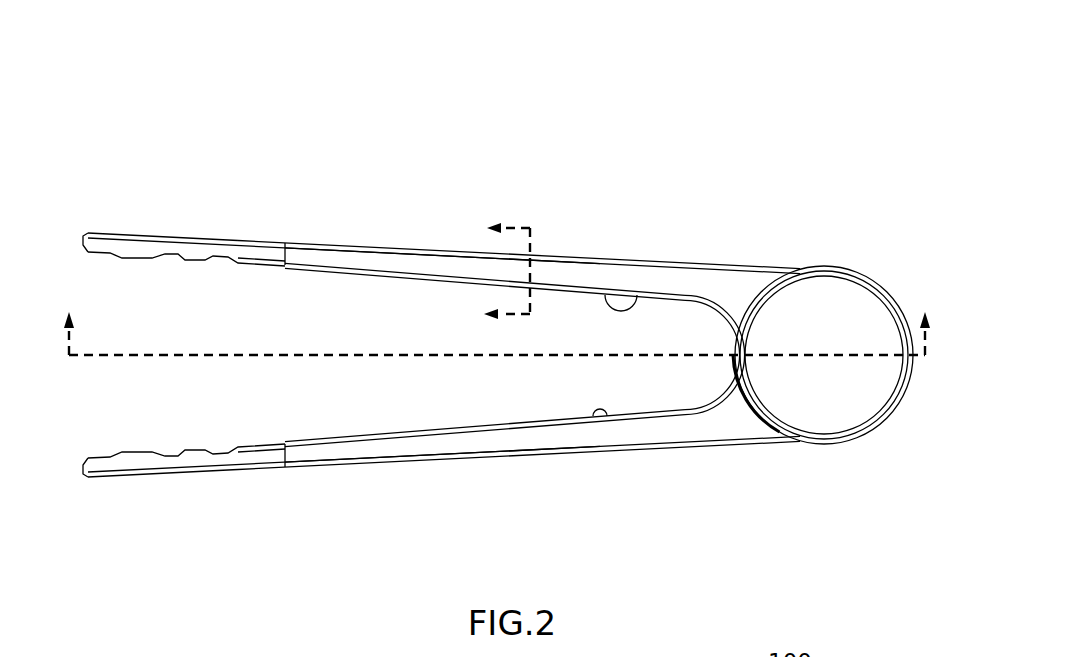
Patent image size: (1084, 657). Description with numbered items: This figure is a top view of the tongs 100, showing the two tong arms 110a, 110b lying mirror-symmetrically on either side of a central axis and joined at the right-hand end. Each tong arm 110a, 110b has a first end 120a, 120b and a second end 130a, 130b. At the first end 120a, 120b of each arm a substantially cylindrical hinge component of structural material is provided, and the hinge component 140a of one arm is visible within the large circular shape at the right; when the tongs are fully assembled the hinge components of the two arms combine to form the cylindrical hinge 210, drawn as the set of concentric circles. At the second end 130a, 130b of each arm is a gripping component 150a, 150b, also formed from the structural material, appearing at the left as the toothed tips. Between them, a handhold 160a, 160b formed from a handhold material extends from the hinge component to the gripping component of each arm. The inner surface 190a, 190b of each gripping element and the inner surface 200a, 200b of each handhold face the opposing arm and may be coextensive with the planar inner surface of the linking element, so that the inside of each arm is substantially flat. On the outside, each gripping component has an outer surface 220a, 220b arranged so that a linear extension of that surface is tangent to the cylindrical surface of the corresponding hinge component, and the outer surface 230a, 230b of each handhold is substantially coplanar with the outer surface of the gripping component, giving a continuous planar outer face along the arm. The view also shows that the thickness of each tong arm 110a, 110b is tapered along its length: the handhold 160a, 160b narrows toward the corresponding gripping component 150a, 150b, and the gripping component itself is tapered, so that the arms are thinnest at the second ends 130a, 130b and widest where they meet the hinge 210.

The tongs 100 is at (722, 76).
The tong arm 110a is at (552, 203).
The tong arm 110b is at (520, 478).
The first end 120a is at (715, 245).
The first end 120b is at (715, 472).
The second end 130a is at (100, 210).
The second end 130b is at (89, 496).
The hinge component 140a is at (818, 413).
The gripping component 150a is at (235, 248).
The gripping component 150b is at (217, 462).
The handhold 160a is at (402, 252).
The handhold 160b is at (332, 462).
The inner surface of gripping element 190a is at (100, 458).
The inner surface of gripping element 190b is at (95, 256).
The inner surface of handhold 200a is at (605, 418).
The inner surface of handhold 200b is at (642, 300).
The cylindrical hinge 210 is at (880, 441).
The outer surface of gripping component 220a is at (165, 472).
The outer surface of gripping component 220b is at (190, 237).
The outer surface of handhold 230a is at (415, 460).
The outer surface of handhold 230b is at (340, 247).